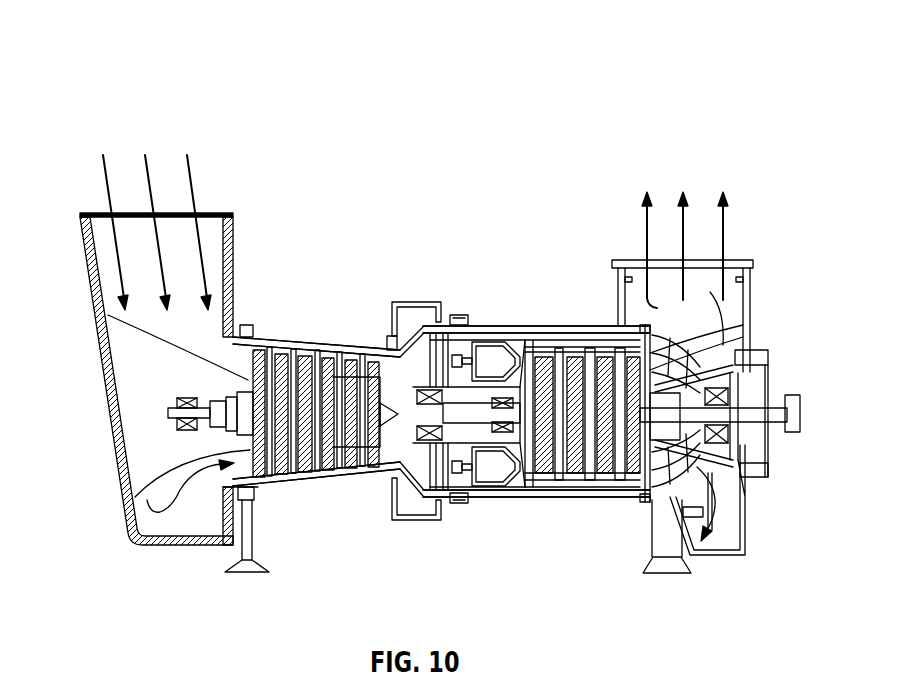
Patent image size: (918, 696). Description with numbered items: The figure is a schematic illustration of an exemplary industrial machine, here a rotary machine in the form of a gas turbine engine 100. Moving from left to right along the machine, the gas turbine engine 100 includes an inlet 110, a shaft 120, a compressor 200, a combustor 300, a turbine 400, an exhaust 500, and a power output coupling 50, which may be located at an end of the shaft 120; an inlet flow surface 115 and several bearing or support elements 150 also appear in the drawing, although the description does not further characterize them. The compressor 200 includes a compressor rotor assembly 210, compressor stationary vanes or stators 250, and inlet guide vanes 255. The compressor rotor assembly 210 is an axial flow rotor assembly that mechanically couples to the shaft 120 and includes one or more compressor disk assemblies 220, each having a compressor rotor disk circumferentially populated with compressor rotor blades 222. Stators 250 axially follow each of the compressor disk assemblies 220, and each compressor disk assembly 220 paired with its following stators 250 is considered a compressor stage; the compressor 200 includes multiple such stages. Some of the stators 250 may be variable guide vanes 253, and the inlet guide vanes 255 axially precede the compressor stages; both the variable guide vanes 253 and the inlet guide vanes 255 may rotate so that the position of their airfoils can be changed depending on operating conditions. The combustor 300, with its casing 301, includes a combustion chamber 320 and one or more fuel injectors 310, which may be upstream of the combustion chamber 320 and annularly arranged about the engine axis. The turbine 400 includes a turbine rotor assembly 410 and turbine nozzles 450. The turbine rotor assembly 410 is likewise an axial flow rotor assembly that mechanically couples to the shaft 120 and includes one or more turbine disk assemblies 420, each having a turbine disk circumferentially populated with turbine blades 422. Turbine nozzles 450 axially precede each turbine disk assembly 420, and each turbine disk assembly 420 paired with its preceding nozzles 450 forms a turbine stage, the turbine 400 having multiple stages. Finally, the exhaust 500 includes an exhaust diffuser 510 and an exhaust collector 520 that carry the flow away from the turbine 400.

The gas turbine engine 100 is at (96, 44).
The inlet 110 is at (232, 131).
The inlet flow surface 115 is at (208, 339).
The shaft 120 is at (178, 401).
The bearings and supports 150 is at (183, 431).
The compressor 200 is at (415, 131).
The compressor rotor assembly 210 is at (316, 512).
The compressor disk assembly 220 is at (296, 492).
The compressor rotor blades 222 is at (450, 414).
The compressor stationary vanes (stators) 250 is at (363, 350).
The variable guide vanes 253 is at (292, 345).
The inlet guide vanes 255 is at (250, 328).
The combustor 300 is at (517, 131).
The combustor casing 301 is at (536, 327).
The fuel injectors 310 is at (455, 315).
The combustion chamber 320 is at (493, 330).
The turbine 400 is at (640, 131).
The turbine rotor assembly 410 is at (582, 520).
The turbine disk assembly 420 is at (620, 498).
The turbine blades 422 is at (518, 468).
The turbine nozzles 450 is at (610, 333).
The exhaust 500 is at (770, 152).
The exhaust diffuser 510 is at (648, 347).
The exhaust collector 520 is at (735, 297).
The power output coupling 50 is at (795, 395).